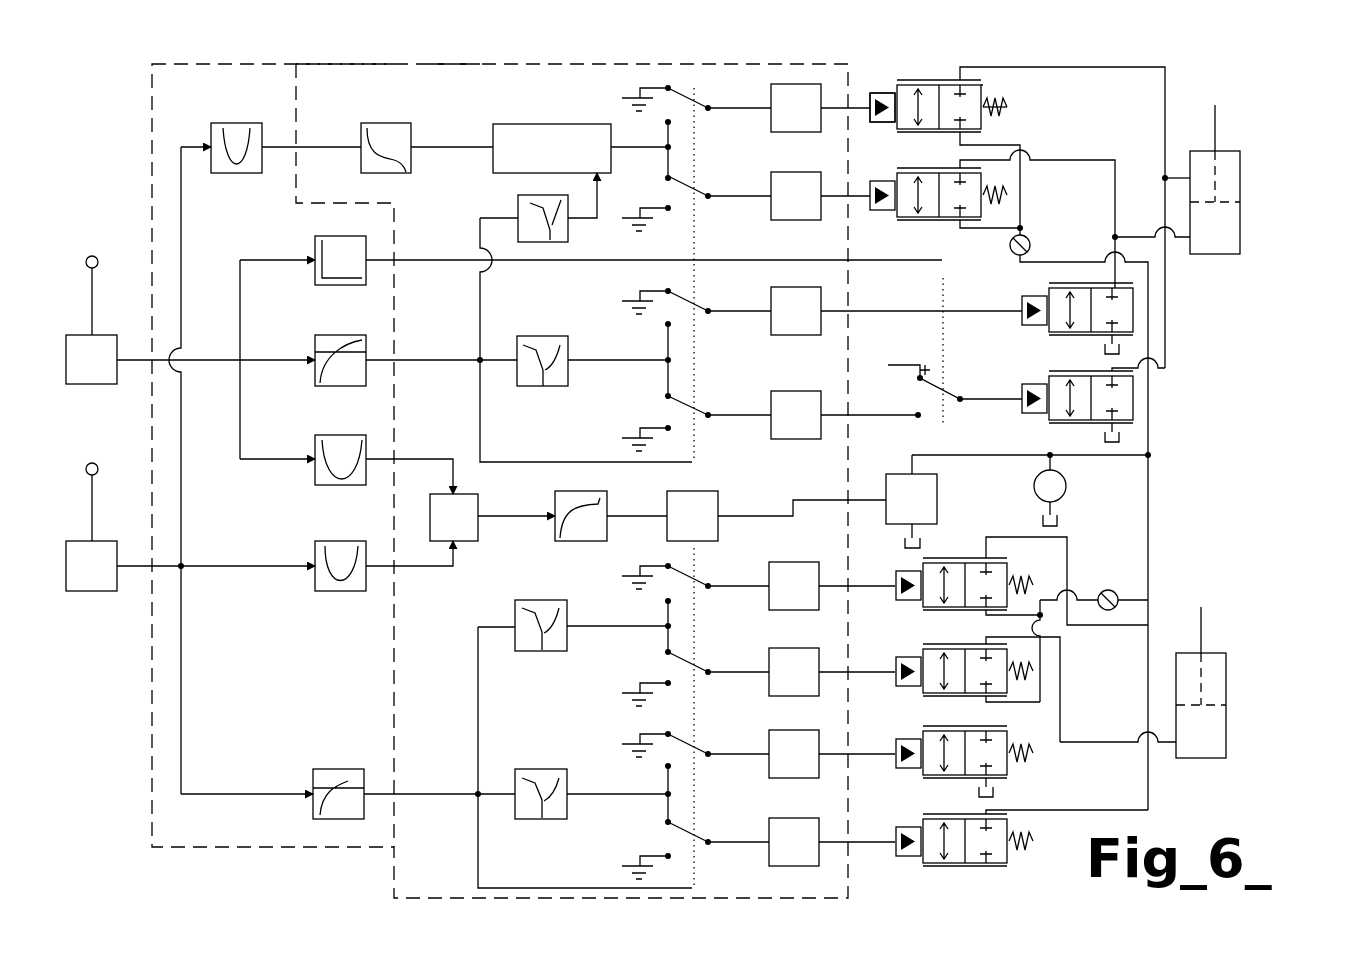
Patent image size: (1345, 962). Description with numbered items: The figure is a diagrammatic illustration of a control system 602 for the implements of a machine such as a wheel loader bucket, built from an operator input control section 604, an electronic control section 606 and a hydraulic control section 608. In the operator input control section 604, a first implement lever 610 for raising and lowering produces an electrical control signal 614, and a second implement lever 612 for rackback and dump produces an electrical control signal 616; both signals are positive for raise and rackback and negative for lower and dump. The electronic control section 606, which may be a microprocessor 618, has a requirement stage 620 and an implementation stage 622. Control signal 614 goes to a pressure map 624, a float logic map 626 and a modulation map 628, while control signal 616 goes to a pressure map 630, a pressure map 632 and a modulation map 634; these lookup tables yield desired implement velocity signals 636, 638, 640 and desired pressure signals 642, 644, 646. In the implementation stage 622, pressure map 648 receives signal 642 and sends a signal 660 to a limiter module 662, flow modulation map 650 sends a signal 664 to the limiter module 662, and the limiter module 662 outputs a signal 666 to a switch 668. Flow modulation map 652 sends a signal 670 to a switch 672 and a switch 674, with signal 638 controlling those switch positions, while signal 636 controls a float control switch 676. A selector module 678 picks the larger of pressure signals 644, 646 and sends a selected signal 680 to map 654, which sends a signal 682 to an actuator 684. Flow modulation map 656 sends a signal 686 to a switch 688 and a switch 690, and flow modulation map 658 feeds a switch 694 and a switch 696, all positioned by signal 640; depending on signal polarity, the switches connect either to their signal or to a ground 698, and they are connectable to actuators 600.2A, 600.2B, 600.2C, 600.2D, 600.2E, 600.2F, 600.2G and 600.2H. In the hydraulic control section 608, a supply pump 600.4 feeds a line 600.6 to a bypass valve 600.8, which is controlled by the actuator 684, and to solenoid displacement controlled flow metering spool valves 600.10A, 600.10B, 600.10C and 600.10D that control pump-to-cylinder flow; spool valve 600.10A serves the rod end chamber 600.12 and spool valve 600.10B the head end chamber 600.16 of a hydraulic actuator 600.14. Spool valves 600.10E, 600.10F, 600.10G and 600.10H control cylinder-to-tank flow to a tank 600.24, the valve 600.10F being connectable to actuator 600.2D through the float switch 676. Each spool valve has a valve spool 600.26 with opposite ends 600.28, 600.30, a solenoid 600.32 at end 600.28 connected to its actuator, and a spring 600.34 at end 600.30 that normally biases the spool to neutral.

The control system 602 is at (726, 56).
The operator input control section 604 is at (190, 347).
The electronic control section 606 is at (626, 56).
The hydraulic control section 608 is at (1143, 57).
The first implement lever 610 is at (95, 289).
The second implement lever 612 is at (95, 496).
The electrical control signal 614 is at (135, 363).
The electrical control signal 616 is at (135, 570).
The microprocessor 618 is at (454, 56).
The requirement stage 620 is at (230, 57).
The implementation stage 622 is at (385, 57).
The pressure map 624 is at (355, 437).
The float logic map 626 is at (352, 236).
The modulation map 628 is at (353, 336).
The pressure map 630 is at (254, 123).
The pressure map 632 is at (358, 543).
The modulation map 634 is at (360, 769).
The desired implement velocity signal 636 is at (385, 262).
The desired implement velocity signal 638 is at (385, 364).
The desired implement velocity signal 640 is at (388, 794).
The desired pressure signal 642 is at (284, 152).
The desired pressure signal 644 is at (385, 464).
The desired pressure signal 646 is at (380, 572).
The pressure map 648 is at (386, 123).
The flow modulation map 650 is at (520, 206).
The flow modulation map 652 is at (550, 336).
The map 654 is at (580, 532).
The flow modulation map 656 is at (546, 601).
The flow modulation map 658 is at (535, 769).
The signal 660 is at (450, 152).
The limiter module 662 is at (570, 124).
The signal 664 is at (576, 218).
The signal 666 is at (644, 150).
The switch 668 is at (700, 102).
The signal 670 is at (592, 360).
The switch 672 is at (700, 305).
The switch 674 is at (700, 411).
The float control switch 676 is at (919, 365).
The selector module 678 is at (469, 493).
The selected signal 680 is at (519, 515).
The signal 682 is at (655, 514).
The actuator 684 is at (720, 529).
The signal 686 is at (642, 627).
The switch 688 is at (700, 584).
The switch 690 is at (700, 670).
The switch 694 is at (700, 752).
The switch 696 is at (700, 840).
The ground 698 is at (634, 101).
The actuator 600.2A is at (811, 134).
The actuator 600.2B is at (811, 221).
The actuator 600.2C is at (811, 336).
The actuator 600.2D is at (811, 441).
The actuator 600.2E is at (811, 612).
The actuator 600.2F is at (811, 696).
The actuator 600.2G is at (811, 778).
The actuator 600.2H is at (811, 867).
The supply pump 600.4 is at (1065, 482).
The line 600.6 is at (1015, 455).
The bypass valve 600.8 is at (937, 490).
The solenoid displacement controlled flow metering spool valve 600.10A is at (977, 201).
The solenoid displacement controlled flow metering spool valve 600.10B is at (955, 220).
The solenoid displacement controlled flow metering spool valve 600.10C is at (955, 609).
The solenoid displacement controlled flow metering spool valve 600.10D is at (955, 694).
The solenoid displacement controlled flow metering spool valve 600.10E is at (1063, 289).
The solenoid displacement controlled flow metering spool valve 600.10F is at (1062, 377).
The solenoid displacement controlled flow metering spool valve 600.10G is at (955, 781).
The solenoid displacement controlled flow metering spool valve 600.10H is at (955, 868).
The rod end chamber 600.12 is at (1236, 183).
The hydraulic actuator 600.14 is at (1240, 239).
The head end chamber 600.16 is at (1210, 241).
The tank 600.24 is at (1043, 521).
The valve spool 600.26 is at (959, 83).
The end 600.28 is at (942, 134).
The end 600.30 is at (983, 91).
The solenoid 600.32 is at (882, 93).
The spring 600.34 is at (1005, 112).